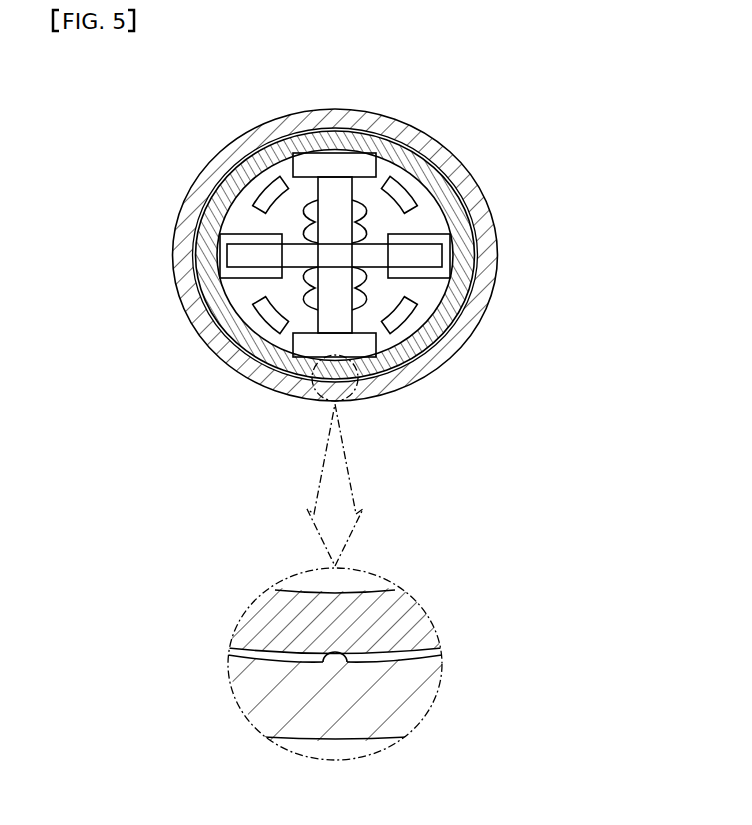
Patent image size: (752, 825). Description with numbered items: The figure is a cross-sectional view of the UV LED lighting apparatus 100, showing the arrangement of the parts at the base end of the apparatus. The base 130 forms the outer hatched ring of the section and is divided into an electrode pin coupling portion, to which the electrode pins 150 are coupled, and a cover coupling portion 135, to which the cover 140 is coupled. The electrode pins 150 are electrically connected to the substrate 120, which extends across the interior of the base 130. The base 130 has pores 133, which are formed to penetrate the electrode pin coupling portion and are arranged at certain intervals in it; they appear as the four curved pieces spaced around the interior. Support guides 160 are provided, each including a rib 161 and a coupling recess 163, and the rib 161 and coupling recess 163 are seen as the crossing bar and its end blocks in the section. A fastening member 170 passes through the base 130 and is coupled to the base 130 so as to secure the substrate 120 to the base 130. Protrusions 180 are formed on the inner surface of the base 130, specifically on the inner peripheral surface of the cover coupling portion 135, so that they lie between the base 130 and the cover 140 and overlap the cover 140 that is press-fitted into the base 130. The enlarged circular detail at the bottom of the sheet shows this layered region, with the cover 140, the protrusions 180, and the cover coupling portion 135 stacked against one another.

The UV LED lighting apparatus 100 is at (458, 121).
The substrate 120 is at (443, 340).
The base 130 is at (195, 163).
The pores 133 is at (275, 184).
The cover coupling portion 135 is at (226, 146).
The cover 140 is at (472, 300).
The electrode pins 150 is at (317, 300).
The support guides 160 is at (244, 236).
The rib 161 is at (257, 237).
The coupling recess 163 is at (236, 258).
The fastening member 170 is at (350, 222).
The protrusions 180 is at (480, 258).